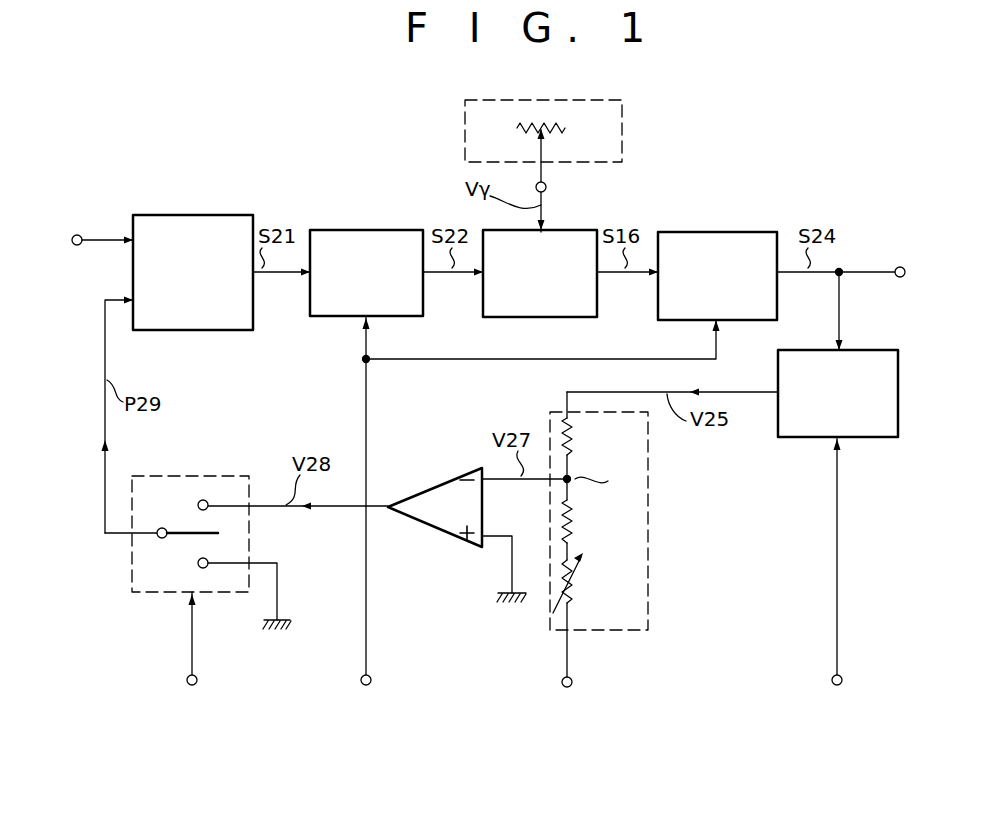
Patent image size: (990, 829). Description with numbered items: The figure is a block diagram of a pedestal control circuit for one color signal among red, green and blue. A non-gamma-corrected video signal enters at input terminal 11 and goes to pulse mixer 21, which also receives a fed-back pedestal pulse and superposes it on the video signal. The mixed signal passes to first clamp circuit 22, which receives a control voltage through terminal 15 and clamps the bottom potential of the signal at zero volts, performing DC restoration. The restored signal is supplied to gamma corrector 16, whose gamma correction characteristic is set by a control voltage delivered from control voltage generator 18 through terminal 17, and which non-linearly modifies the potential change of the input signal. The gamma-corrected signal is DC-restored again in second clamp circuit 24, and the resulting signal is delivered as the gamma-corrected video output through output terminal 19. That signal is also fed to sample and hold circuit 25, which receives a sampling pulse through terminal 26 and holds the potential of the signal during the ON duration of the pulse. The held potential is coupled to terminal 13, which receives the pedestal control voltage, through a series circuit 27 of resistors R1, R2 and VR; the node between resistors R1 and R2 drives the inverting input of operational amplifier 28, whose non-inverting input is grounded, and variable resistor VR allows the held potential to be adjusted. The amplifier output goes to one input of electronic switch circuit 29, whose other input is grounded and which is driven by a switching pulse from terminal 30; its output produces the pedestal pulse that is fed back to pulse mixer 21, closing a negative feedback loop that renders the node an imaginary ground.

The input terminal 11 is at (78, 235).
The pulse mixer 21 is at (190, 215).
The first clamp circuit 22 is at (372, 230).
The gamma corrector 16 is at (590, 231).
The gamma control voltage terminal 17 is at (546, 187).
The control voltage generator 18 is at (622, 118).
The second clamp circuit 24 is at (727, 232).
The output terminal 19 is at (900, 267).
The sample and hold circuit 25 is at (898, 382).
The terminal 26 is at (842, 684).
The series circuit of resistors 27 is at (631, 534).
The operational amplifier 28 is at (437, 487).
The electronic switch circuit 29 is at (232, 476).
The terminal 30 is at (197, 680).
The terminal 15 is at (371, 680).
The terminal 13 is at (572, 682).
The resistor R1 is at (576, 438).
The resistor R2 is at (576, 530).
The variable resistor VR is at (576, 585).